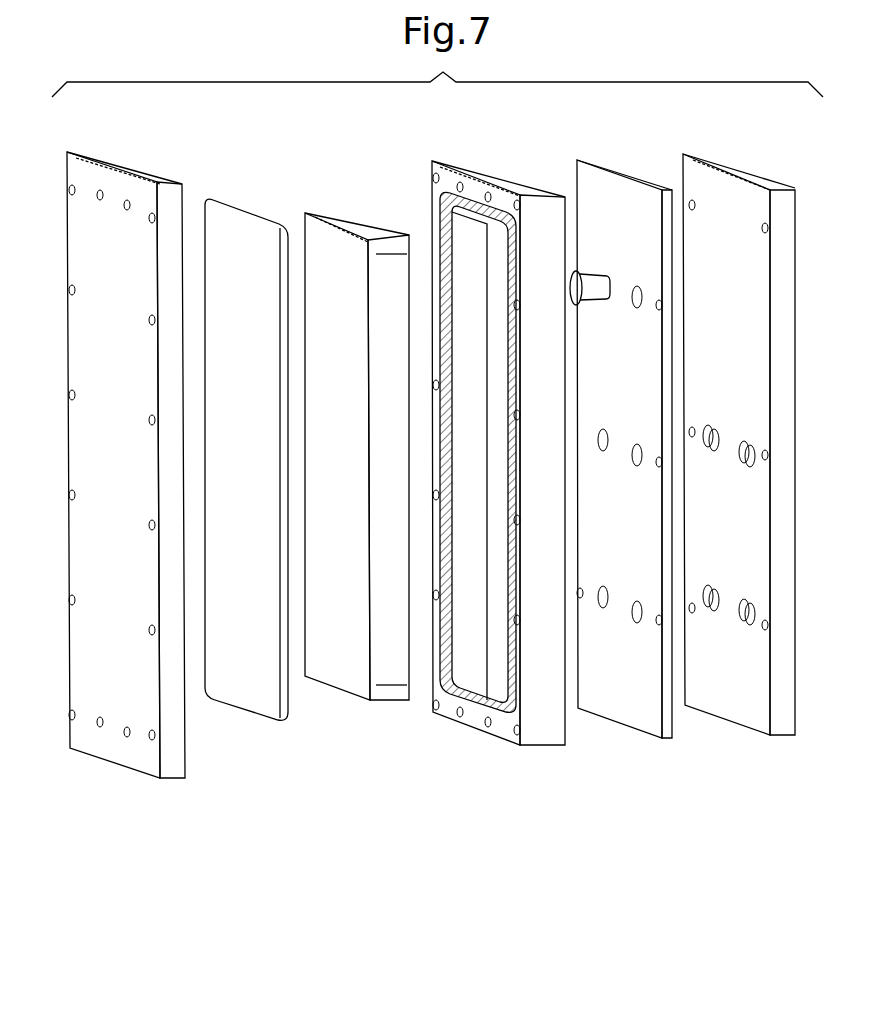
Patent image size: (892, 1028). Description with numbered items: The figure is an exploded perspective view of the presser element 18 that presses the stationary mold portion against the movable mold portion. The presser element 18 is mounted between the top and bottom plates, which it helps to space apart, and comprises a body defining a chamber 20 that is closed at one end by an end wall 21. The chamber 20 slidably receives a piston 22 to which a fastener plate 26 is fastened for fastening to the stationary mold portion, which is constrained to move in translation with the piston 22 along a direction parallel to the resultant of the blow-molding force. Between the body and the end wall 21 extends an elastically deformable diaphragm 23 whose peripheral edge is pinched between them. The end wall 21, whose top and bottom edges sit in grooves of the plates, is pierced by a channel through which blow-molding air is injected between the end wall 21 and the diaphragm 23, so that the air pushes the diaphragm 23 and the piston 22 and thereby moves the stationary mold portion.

The presser element 18 is at (382, 790).
The chamber 20 is at (468, 636).
The end wall 21 is at (108, 762).
The piston 22 is at (335, 695).
The elastically deformable diaphragm 23 is at (240, 713).
The fastener plate 26 is at (725, 720).